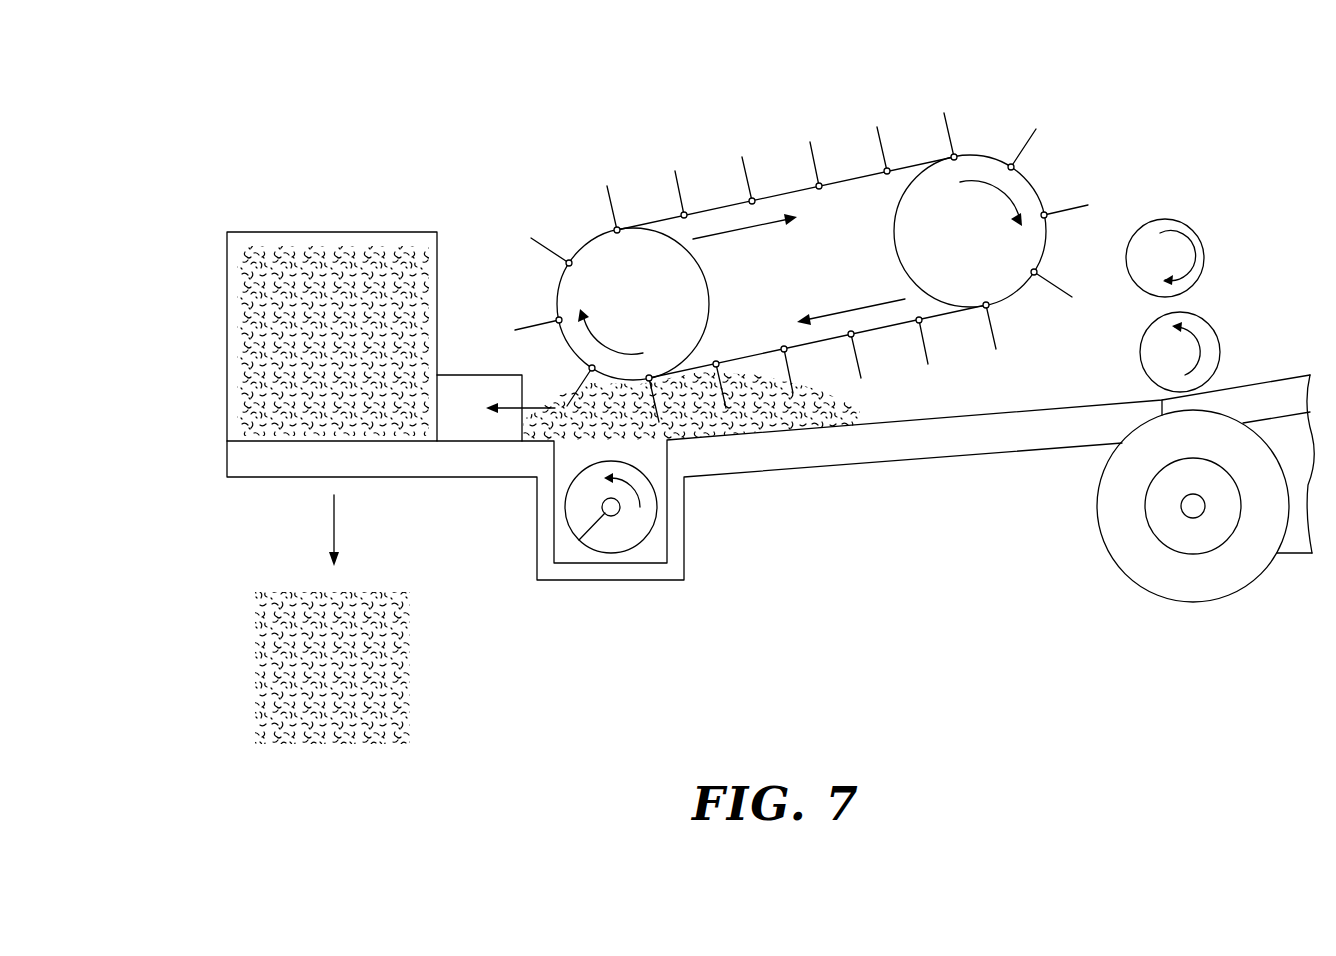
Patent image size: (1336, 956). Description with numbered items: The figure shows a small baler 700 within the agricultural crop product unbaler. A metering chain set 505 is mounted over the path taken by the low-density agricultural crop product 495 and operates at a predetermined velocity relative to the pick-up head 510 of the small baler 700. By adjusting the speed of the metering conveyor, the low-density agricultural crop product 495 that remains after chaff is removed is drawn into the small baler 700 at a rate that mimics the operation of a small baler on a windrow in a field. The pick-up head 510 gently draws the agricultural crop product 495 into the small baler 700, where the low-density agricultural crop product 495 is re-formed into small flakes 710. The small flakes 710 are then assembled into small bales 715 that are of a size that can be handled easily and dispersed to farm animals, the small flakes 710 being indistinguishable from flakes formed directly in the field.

The small baler 700 is at (332, 178).
The small flakes 710 is at (376, 262).
The pick-up head 510 is at (476, 356).
The metering chain set 505 is at (784, 193).
The low-density agricultural crop product 495 is at (758, 410).
The small bales 715 is at (393, 668).